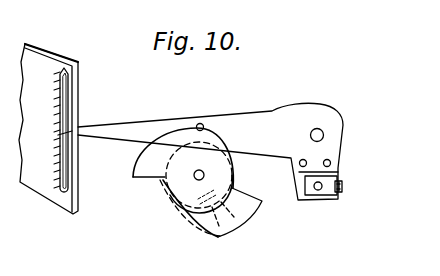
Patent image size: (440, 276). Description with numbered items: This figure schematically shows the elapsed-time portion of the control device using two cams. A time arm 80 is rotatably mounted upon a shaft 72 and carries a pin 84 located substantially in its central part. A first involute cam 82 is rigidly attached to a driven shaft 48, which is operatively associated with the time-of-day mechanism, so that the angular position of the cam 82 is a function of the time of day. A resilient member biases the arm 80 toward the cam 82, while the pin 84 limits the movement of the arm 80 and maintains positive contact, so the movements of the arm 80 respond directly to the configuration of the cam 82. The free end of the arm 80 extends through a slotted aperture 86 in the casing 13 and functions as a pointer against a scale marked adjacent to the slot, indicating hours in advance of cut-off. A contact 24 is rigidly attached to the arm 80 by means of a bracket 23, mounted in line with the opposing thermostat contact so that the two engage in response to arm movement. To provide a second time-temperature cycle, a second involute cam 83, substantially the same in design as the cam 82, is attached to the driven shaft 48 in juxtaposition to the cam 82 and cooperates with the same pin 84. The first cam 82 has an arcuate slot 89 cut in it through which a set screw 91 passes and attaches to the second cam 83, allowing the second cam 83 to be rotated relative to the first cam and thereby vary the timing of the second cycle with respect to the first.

The casing 13 is at (47, 31).
The slotted aperture 86 is at (66, 70).
The arm 80 is at (259, 114).
The shaft 72 is at (324, 133).
The bracket 23 is at (336, 196).
The contact 24 is at (344, 186).
The pin 84 is at (202, 123).
The involute cam 82 is at (138, 172).
The driven shaft 48 is at (195, 179).
The second involute cam 83 is at (243, 198).
The arcuate slot 89 is at (237, 215).
The set screw 91 is at (161, 217).